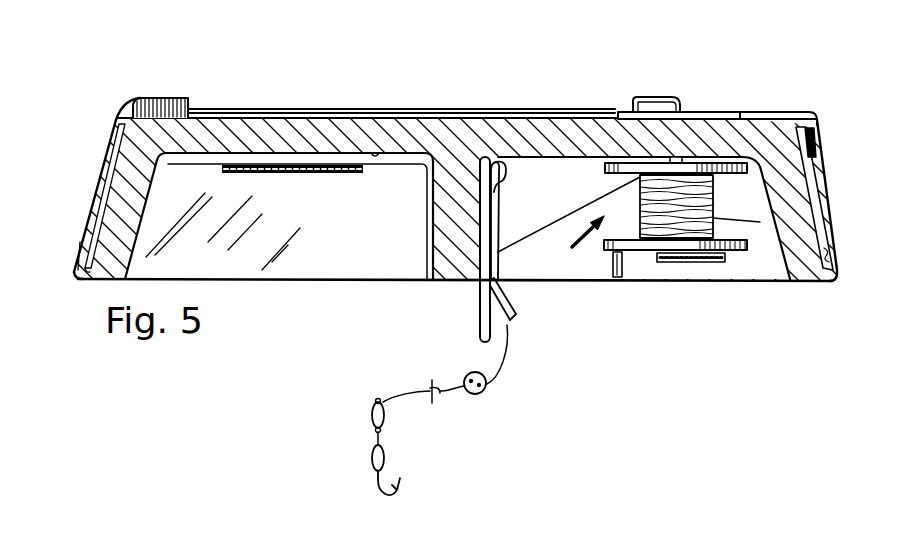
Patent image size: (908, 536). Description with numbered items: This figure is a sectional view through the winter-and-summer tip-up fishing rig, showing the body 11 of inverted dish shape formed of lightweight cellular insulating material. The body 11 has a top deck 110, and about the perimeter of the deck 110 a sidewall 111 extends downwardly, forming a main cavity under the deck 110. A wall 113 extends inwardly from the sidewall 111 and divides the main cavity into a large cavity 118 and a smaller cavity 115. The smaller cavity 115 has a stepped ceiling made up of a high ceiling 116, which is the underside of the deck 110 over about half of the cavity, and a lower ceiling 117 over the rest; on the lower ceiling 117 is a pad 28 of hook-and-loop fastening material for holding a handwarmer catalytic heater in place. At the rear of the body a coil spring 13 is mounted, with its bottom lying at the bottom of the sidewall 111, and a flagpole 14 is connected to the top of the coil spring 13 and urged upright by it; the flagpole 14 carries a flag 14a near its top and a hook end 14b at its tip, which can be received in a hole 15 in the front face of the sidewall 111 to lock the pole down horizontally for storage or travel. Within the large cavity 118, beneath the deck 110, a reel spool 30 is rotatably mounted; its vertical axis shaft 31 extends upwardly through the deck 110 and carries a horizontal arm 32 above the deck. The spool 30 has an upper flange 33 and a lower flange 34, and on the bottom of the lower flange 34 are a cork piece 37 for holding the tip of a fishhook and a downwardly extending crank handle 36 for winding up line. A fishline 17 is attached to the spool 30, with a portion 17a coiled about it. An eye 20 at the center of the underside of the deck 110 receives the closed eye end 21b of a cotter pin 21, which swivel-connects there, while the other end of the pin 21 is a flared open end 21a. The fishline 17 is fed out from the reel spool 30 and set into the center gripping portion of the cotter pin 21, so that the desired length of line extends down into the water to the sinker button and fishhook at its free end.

The body 11 is at (310, 82).
The coil spring 13 is at (131, 98).
The flagpole 14 is at (248, 108).
The flag 14a is at (713, 113).
The hook end 14b is at (817, 118).
The hole 15 is at (817, 147).
The fishline 17 is at (555, 220).
The coiled portion of fishline 17a is at (707, 220).
The eye 20 is at (513, 156).
The cotter pin 21 is at (477, 284).
The flared open end 21a is at (506, 323).
The closed eye end 21b is at (502, 172).
The pad of VELCRO fastening material 28 is at (320, 173).
The reel spool 30 is at (567, 244).
The vertical axis shaft 31 is at (673, 157).
The horizontal arm 32 is at (648, 94).
The upper flange 33 is at (758, 184).
The lower flange 34 is at (742, 251).
The crank handle 36 is at (620, 278).
The cork piece 37 is at (676, 262).
The top deck 110 is at (338, 110).
The sidewall 111 is at (100, 185).
The wall 113 is at (439, 233).
The smaller cavity 115 is at (270, 258).
The high ceiling 116 is at (372, 153).
The lower ceiling 117 is at (393, 167).
The large cavity 118 is at (594, 268).